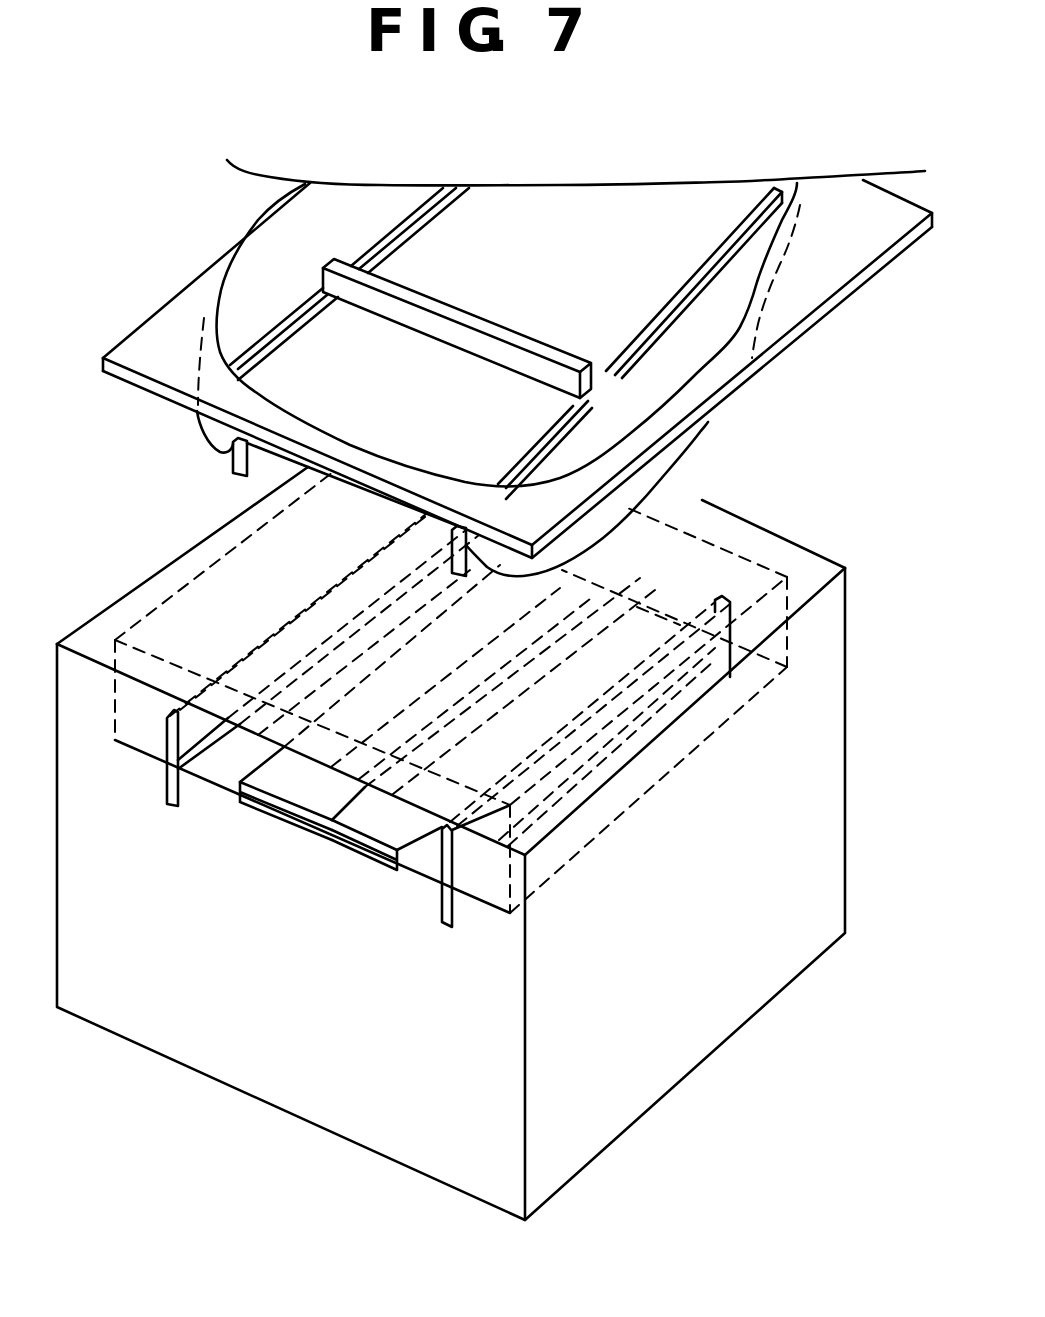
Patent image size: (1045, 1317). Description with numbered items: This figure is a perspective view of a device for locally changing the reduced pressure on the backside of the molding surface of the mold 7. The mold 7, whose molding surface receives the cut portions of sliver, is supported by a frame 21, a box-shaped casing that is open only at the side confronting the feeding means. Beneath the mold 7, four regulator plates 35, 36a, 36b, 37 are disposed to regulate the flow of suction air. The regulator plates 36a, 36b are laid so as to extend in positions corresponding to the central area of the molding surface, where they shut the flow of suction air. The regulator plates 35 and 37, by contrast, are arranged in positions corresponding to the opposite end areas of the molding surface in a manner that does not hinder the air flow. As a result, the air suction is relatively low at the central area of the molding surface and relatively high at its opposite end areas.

The mold 7 is at (833, 277).
The frame 21 is at (830, 772).
The regulator plate 35 is at (187, 787).
The regulator plate 36a is at (278, 787).
The regulator plate 36b is at (365, 823).
The regulator plate 37 is at (460, 897).